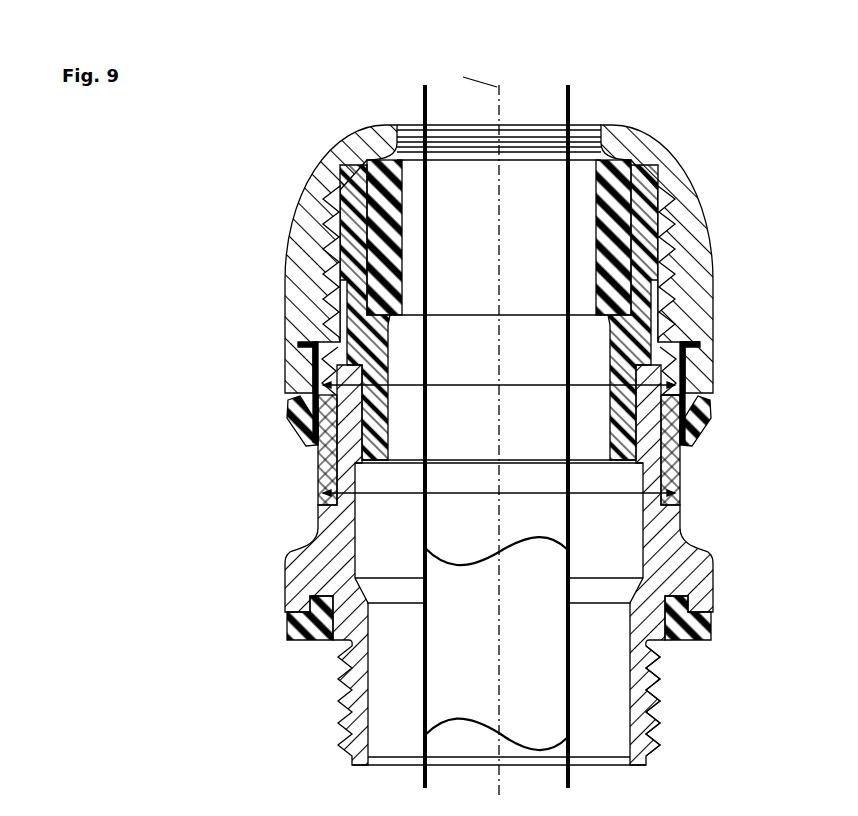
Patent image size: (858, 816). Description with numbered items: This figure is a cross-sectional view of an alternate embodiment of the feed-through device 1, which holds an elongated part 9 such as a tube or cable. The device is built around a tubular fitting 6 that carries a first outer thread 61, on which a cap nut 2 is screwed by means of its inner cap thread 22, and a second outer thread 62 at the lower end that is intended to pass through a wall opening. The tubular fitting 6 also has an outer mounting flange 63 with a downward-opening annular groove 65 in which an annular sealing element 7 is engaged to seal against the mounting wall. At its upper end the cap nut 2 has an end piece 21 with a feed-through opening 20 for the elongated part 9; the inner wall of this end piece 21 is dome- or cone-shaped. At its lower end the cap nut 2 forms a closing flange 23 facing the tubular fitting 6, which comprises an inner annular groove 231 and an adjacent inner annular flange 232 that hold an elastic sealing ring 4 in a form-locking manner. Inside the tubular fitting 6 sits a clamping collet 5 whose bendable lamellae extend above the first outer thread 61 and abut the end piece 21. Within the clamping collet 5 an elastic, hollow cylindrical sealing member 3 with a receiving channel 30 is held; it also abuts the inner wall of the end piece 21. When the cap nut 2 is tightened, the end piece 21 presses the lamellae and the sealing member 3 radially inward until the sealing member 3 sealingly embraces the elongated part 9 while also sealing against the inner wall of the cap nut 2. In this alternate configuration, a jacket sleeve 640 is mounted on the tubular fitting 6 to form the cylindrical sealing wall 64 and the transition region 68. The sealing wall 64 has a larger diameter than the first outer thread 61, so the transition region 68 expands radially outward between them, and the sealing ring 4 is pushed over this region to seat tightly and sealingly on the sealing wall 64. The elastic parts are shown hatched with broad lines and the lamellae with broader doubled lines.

The feed-through device 1 is at (273, 125).
The cap nut 2 is at (330, 163).
The sealing member 3 is at (362, 290).
The sealing ring 4 is at (303, 418).
The clamping collet 5 is at (355, 305).
The tubular fitting 6 is at (307, 522).
The annular sealing element 7 is at (287, 623).
The elongated part 9 is at (428, 107).
The feed-through opening 20 is at (577, 153).
The end piece 21 is at (650, 158).
The inner cap thread 22 is at (667, 237).
The closing flange 23 is at (708, 358).
The receiving channel 30 is at (418, 227).
The first outer thread 61 is at (668, 322).
The second outer thread 62 is at (637, 690).
The outer mounting flange 63 is at (685, 566).
The sealing wall 64 is at (680, 480).
The annular groove 65 is at (683, 603).
The transition region 68 is at (307, 385).
The inner annular groove 231 is at (703, 347).
The inner annular flange 232 is at (702, 392).
The jacket sleeve 640 is at (678, 460).